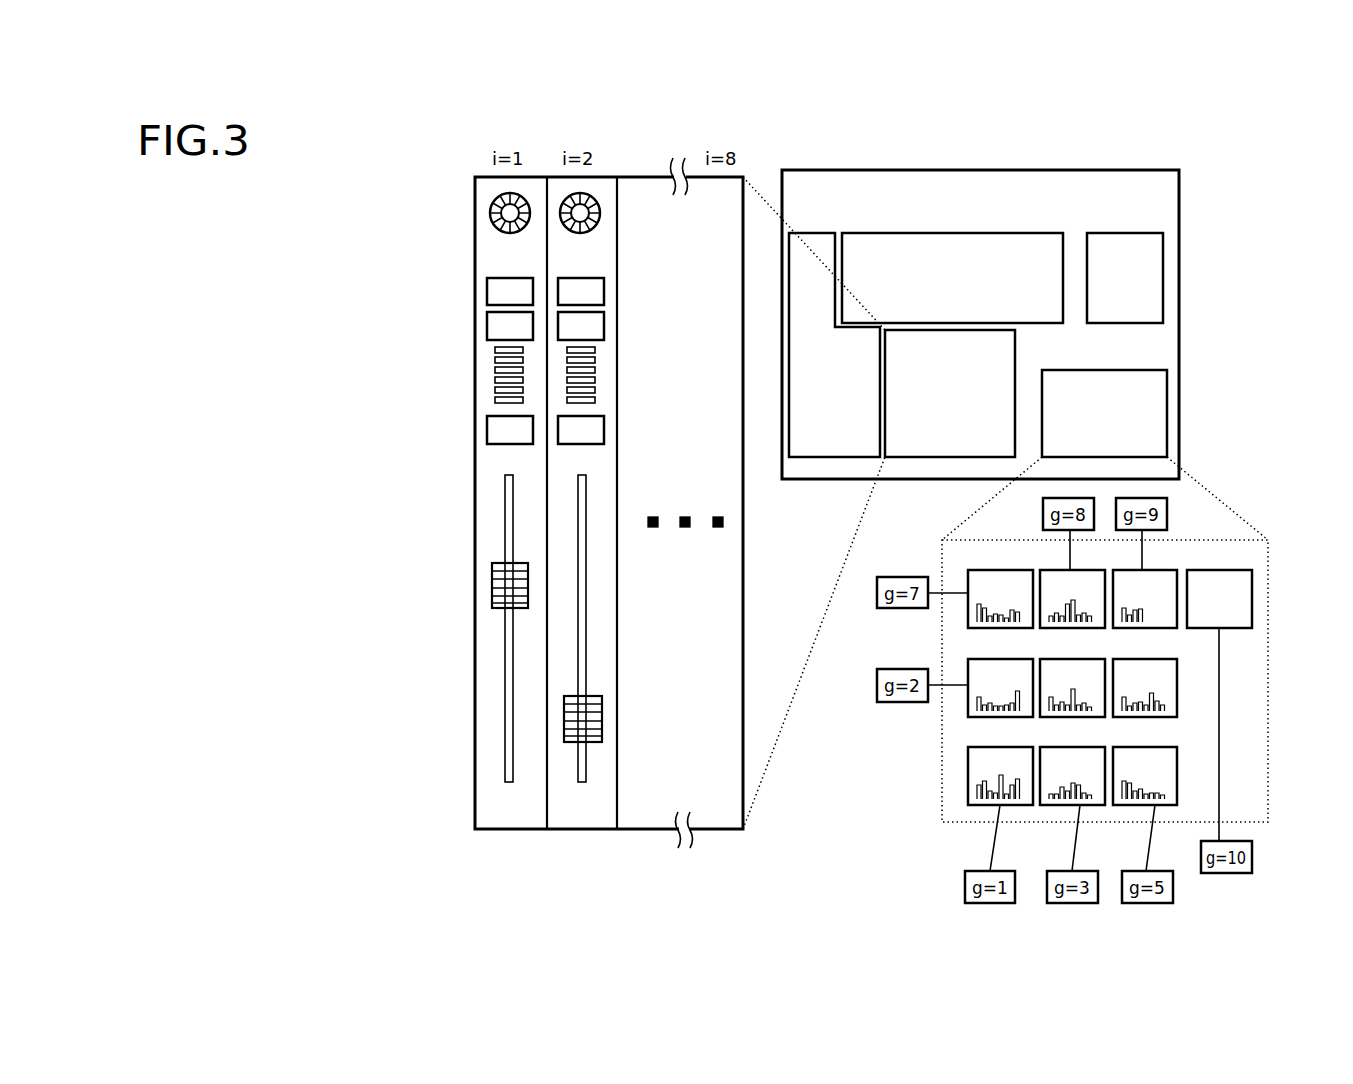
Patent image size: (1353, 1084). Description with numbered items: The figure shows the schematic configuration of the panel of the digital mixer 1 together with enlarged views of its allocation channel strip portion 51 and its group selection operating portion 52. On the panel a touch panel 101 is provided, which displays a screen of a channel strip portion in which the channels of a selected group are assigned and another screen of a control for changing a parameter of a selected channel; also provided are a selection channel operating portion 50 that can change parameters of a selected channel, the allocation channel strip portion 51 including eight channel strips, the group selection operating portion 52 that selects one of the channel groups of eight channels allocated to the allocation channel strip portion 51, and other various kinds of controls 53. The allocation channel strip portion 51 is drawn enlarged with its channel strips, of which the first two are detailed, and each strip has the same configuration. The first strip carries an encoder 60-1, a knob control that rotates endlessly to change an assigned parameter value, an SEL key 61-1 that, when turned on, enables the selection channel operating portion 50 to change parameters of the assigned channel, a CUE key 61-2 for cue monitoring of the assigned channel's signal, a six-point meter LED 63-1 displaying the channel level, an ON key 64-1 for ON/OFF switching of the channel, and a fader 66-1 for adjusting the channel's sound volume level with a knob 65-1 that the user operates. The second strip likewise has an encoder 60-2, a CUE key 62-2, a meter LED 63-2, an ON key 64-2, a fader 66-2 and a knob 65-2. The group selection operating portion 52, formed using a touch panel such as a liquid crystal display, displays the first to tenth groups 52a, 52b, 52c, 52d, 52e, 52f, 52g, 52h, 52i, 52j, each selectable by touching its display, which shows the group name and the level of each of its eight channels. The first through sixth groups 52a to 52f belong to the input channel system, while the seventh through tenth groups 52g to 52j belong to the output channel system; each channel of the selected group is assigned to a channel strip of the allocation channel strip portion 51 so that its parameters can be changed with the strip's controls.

The digital mixer 1 is at (975, 168).
The allocation channel strip portion 51 is at (600, 140).
The touch panel 101 is at (952, 278).
The various kinds of controls 53 is at (1125, 278).
The selection channel operating portion 50 is at (834, 345).
The group selection operating portion 52 is at (1105, 596).
The first group 52a is at (1000, 765).
The second group 52b is at (1000, 676).
The third group 52c is at (1072, 765).
The fourth group 52d is at (1072, 676).
The fifth group 52e is at (1145, 765).
The sixth group 52f is at (1145, 676).
The seventh group 52g is at (1000, 588).
The eighth group 52h is at (1072, 588).
The ninth group 52i is at (1145, 588).
The tenth group 52j is at (1219, 588).
The encoder 60-1 is at (488, 216).
The encoder 60-2 is at (600, 215).
The SEL key 61-1 is at (487, 292).
The CUE button (channel 1) 61-2 is at (487, 325).
The CUE key 62-2 is at (605, 325).
The meter LED 63-1 is at (487, 389).
The meter LED 63-2 is at (600, 370).
The ON key 64-1 is at (487, 434).
The ON key 64-2 is at (605, 432).
The knob 65-1 is at (492, 587).
The knob 65-2 is at (602, 720).
The fader 66-1 is at (502, 685).
The fader 66-2 is at (588, 639).